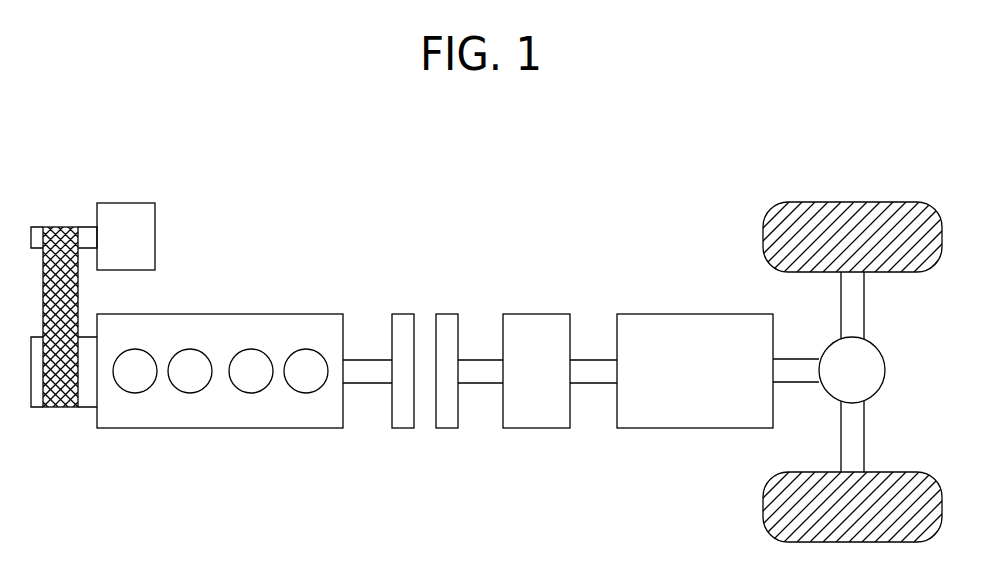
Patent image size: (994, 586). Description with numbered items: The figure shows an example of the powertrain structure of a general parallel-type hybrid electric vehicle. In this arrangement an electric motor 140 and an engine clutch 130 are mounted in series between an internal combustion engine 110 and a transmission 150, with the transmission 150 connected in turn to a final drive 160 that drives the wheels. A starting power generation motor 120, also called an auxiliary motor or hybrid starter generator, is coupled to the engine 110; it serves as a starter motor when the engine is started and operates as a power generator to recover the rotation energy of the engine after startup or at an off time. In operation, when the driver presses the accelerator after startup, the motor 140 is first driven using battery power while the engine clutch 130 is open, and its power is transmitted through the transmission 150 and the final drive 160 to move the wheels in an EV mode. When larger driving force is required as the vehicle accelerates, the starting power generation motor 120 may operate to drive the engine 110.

The internal combustion engine 110 is at (300, 314).
The starting power generation motor 120 is at (155, 217).
The engine clutch 130 is at (447, 314).
The electric motor 140 is at (540, 314).
The transmission 150 is at (732, 314).
The final drive 160 is at (882, 353).